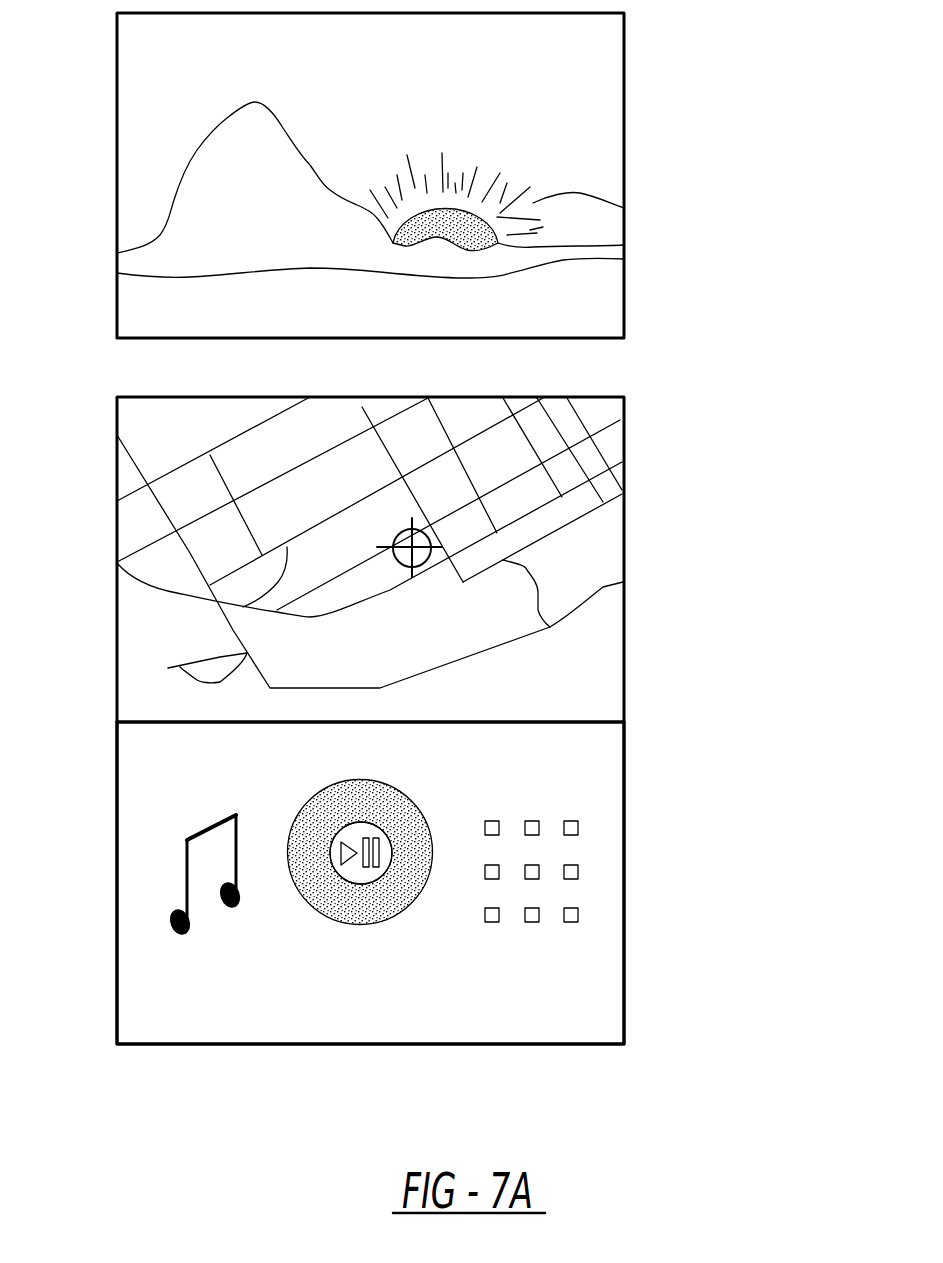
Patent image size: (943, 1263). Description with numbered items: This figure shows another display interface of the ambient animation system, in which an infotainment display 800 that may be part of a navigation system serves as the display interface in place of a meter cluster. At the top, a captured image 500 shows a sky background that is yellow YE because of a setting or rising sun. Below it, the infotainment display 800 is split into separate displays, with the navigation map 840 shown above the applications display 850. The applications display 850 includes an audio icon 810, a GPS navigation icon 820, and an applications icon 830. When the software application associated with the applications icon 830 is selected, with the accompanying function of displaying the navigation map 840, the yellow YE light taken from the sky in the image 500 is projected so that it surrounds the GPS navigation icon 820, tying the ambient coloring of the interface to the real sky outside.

The image 500 is at (431, 560).
The yellow YE is at (624, 208).
The infotainment display 800 is at (715, 688).
The audio icon 810 is at (187, 868).
The GPS navigation icon 820 is at (368, 875).
The applications icon 830 is at (578, 915).
The navigation map 840 is at (602, 538).
The applications display 850 is at (607, 755).